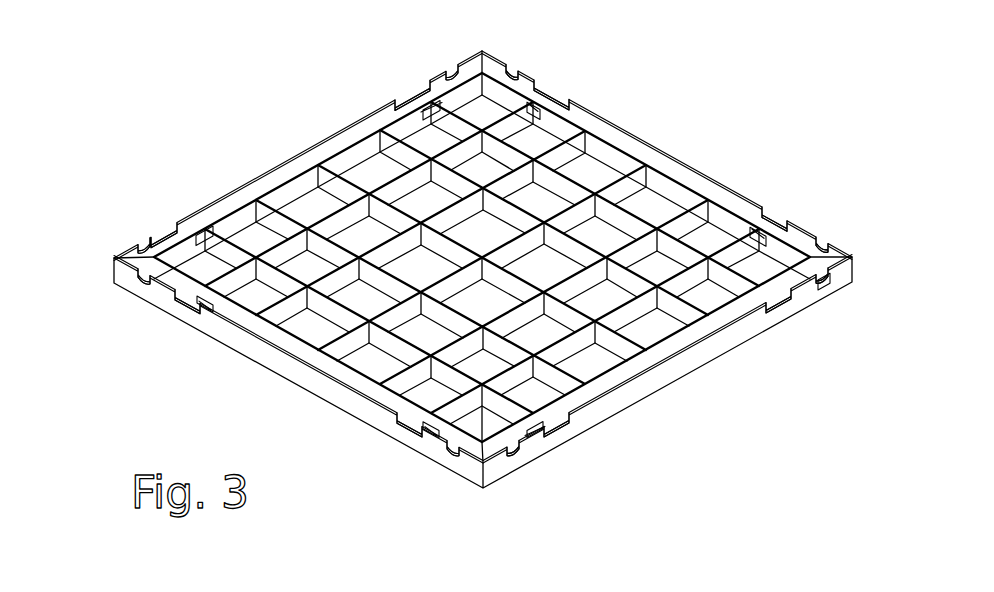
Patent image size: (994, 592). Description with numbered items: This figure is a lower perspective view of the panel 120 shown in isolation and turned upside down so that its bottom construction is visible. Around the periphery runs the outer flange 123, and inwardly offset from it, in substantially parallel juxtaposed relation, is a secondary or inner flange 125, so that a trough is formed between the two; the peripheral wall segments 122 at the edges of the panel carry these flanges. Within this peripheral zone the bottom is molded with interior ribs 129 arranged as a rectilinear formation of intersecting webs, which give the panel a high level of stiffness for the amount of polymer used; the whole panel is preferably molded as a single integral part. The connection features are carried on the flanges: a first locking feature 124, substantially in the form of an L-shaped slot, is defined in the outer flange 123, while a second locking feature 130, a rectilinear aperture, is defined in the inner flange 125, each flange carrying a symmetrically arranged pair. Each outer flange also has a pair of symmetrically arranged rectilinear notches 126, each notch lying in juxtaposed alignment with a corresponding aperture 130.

The panel 120 is at (291, 50).
The side wall 122 is at (410, 60).
The outer flange 123 is at (300, 157).
The first locking feature 124 is at (454, 66).
The inner flange 125 is at (617, 157).
The notch 126 is at (402, 102).
The interior rib 129 is at (327, 253).
The second locking feature 130 is at (433, 104).